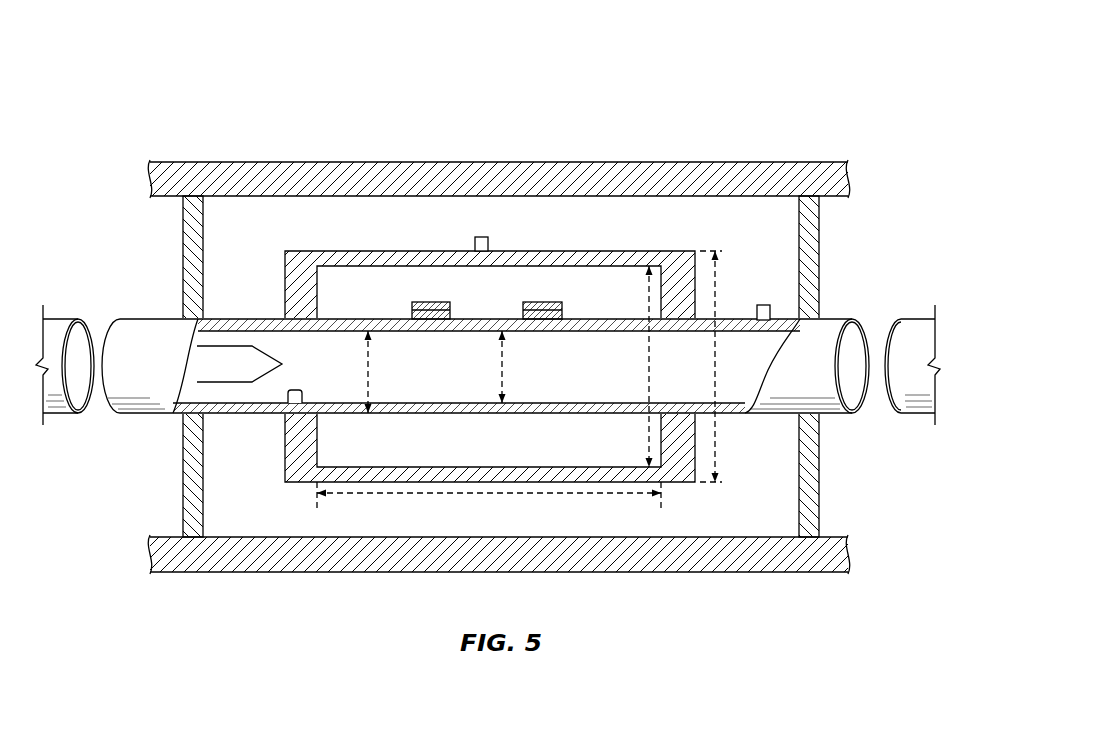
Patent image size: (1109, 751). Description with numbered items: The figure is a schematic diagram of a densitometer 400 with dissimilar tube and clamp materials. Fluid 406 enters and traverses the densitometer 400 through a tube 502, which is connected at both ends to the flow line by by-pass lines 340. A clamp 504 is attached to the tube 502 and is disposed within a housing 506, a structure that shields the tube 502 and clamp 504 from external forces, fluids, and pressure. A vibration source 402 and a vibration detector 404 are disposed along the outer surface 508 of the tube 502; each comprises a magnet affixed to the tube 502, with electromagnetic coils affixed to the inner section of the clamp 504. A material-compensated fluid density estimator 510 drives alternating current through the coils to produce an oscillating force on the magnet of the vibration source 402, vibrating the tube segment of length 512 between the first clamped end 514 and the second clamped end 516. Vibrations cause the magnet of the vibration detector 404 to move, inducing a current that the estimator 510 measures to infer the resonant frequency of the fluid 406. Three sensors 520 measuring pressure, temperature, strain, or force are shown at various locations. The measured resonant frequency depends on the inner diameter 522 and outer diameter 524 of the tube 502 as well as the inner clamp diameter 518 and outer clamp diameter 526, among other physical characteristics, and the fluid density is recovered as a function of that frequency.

The densitometer 400 is at (815, 100).
The by-pass lines 340 is at (55, 328).
The vibration source 402 is at (412, 315).
The vibration detector 404 is at (523, 315).
The fluid 406 is at (240, 376).
The tube 502 is at (160, 330).
The clamp 504 is at (314, 250).
The housing 506 is at (654, 162).
The outer surface 508 is at (576, 319).
The material-compensated fluid density estimator 510 is at (482, 264).
The tube segment of length L 512 is at (472, 493).
The first clamped end 514 is at (272, 424).
The second clamped end 516 is at (703, 423).
The inner clamp diameter 518 is at (648, 352).
The sensors 520 is at (488, 238).
The inner diameter 522 is at (500, 365).
The outer diameter 524 is at (370, 363).
The outer clamp diameter 526 is at (718, 289).